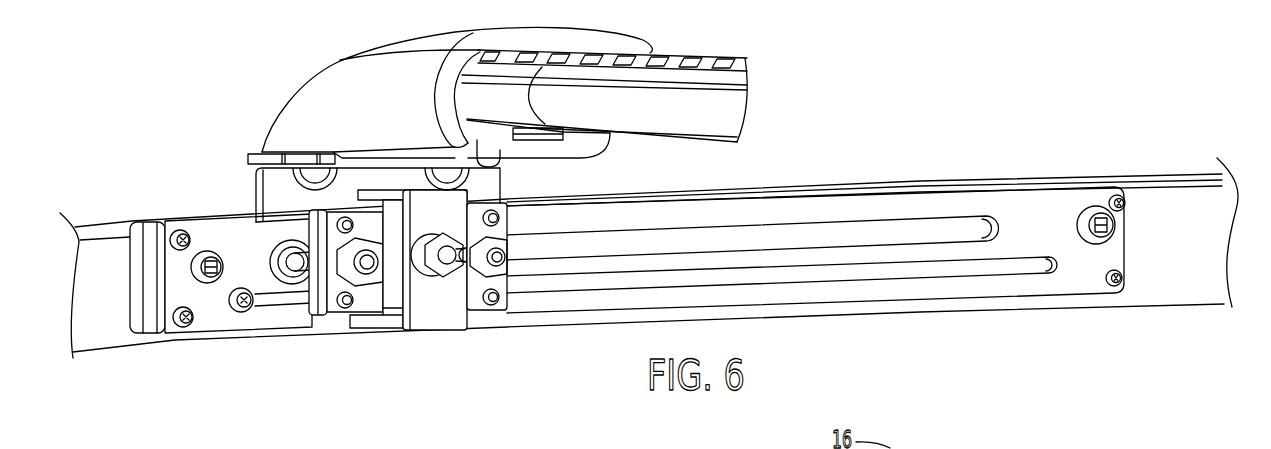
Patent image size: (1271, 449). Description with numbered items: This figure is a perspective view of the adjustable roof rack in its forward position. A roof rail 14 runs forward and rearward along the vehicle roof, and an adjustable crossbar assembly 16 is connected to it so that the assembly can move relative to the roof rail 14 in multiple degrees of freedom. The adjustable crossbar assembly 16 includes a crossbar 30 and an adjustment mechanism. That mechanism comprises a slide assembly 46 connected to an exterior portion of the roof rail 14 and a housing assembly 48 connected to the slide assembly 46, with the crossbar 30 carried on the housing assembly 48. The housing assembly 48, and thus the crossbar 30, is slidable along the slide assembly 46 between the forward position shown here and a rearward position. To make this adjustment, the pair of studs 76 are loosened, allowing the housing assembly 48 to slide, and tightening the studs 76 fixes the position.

The roof rail 14 is at (1140, 172).
The adjustable crossbar assembly 16 is at (728, 40).
The crossbar 30 is at (353, 73).
The slide assembly 46 is at (205, 323).
The housing assembly 48 is at (420, 338).
The studs 76 is at (230, 317).